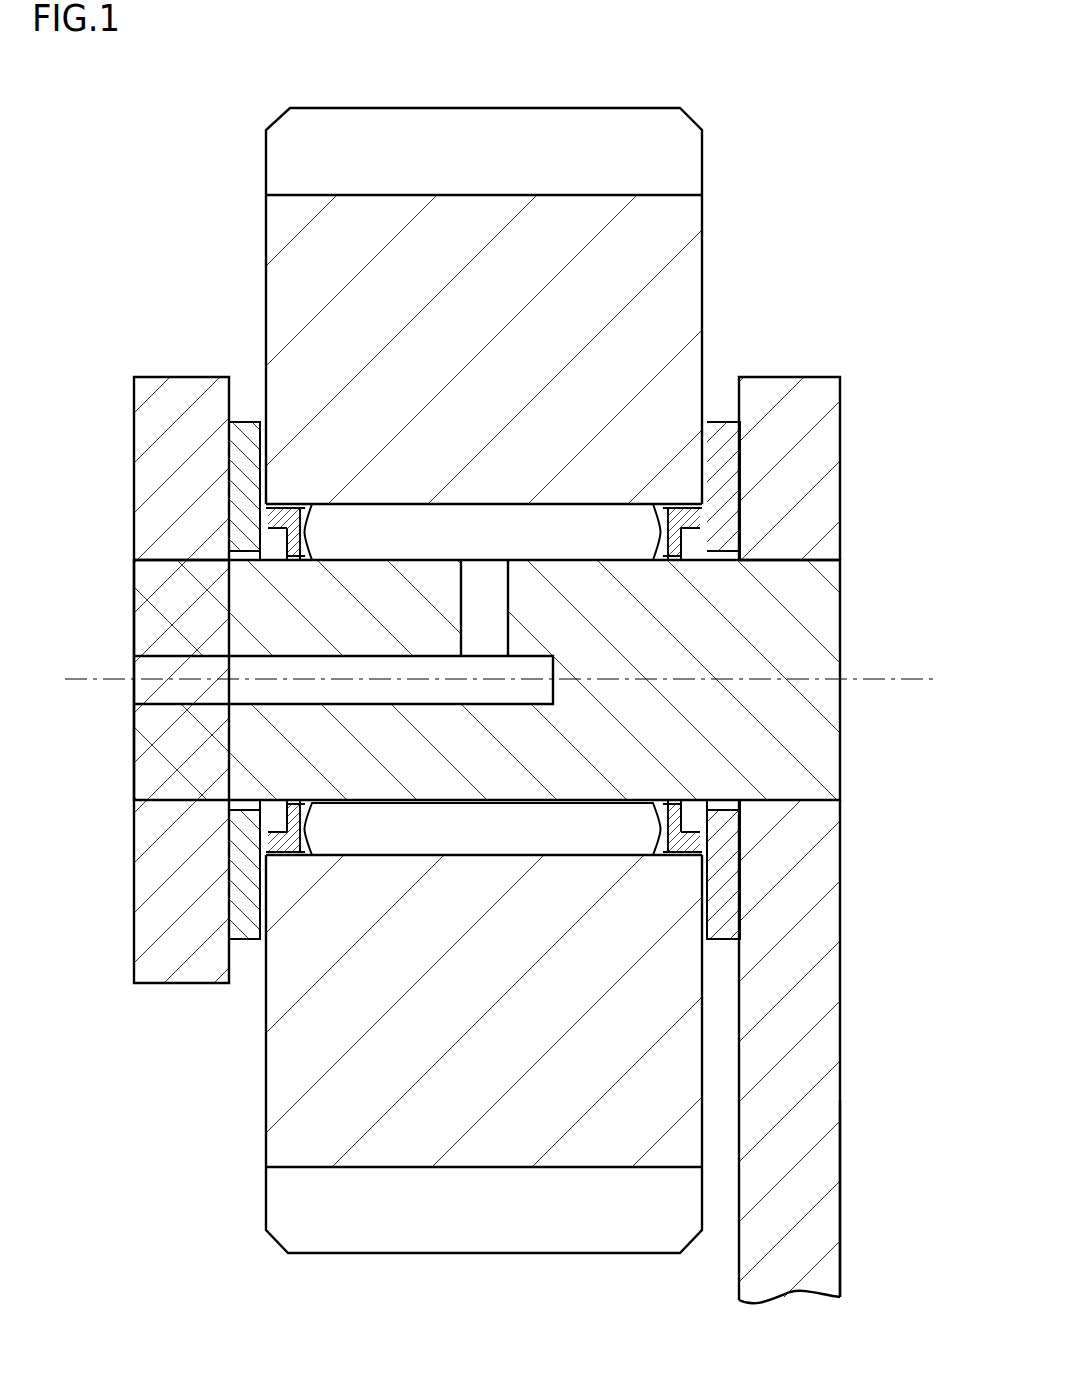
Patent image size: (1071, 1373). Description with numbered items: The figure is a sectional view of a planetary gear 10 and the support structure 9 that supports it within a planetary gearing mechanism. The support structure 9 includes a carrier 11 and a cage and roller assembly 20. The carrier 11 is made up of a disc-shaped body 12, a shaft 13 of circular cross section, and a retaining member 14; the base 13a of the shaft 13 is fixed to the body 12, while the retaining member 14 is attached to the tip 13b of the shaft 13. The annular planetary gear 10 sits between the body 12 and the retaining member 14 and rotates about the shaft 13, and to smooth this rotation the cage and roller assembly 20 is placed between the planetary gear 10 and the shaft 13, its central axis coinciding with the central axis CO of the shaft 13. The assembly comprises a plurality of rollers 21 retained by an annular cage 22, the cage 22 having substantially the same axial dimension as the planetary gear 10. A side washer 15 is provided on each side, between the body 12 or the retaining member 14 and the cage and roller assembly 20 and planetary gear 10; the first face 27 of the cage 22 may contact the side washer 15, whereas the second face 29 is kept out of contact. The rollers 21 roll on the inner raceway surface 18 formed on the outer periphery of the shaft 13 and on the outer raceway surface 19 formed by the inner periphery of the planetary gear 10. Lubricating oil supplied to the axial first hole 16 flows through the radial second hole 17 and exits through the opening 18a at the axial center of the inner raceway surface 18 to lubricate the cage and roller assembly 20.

The support structure 9 is at (133, 822).
The planetary gear 10 is at (266, 240).
The carrier 11 is at (840, 1213).
The body 12 is at (819, 385).
The shaft 13 is at (134, 755).
The base 13a is at (820, 560).
The tip 13b is at (157, 600).
The retaining member 14 is at (148, 428).
The side washer 15 is at (240, 490).
The first hole 16 is at (165, 703).
The second hole 17 is at (462, 618).
The inner raceway surface 18 is at (365, 855).
The opening 18a is at (462, 560).
The outer raceway surface 19 is at (521, 855).
The cage and roller assembly 20 is at (388, 504).
The rollers 21 is at (427, 857).
The cage 22 is at (275, 845).
The first face 27 is at (703, 843).
The second face 29 is at (683, 820).
The central axis CO is at (905, 679).